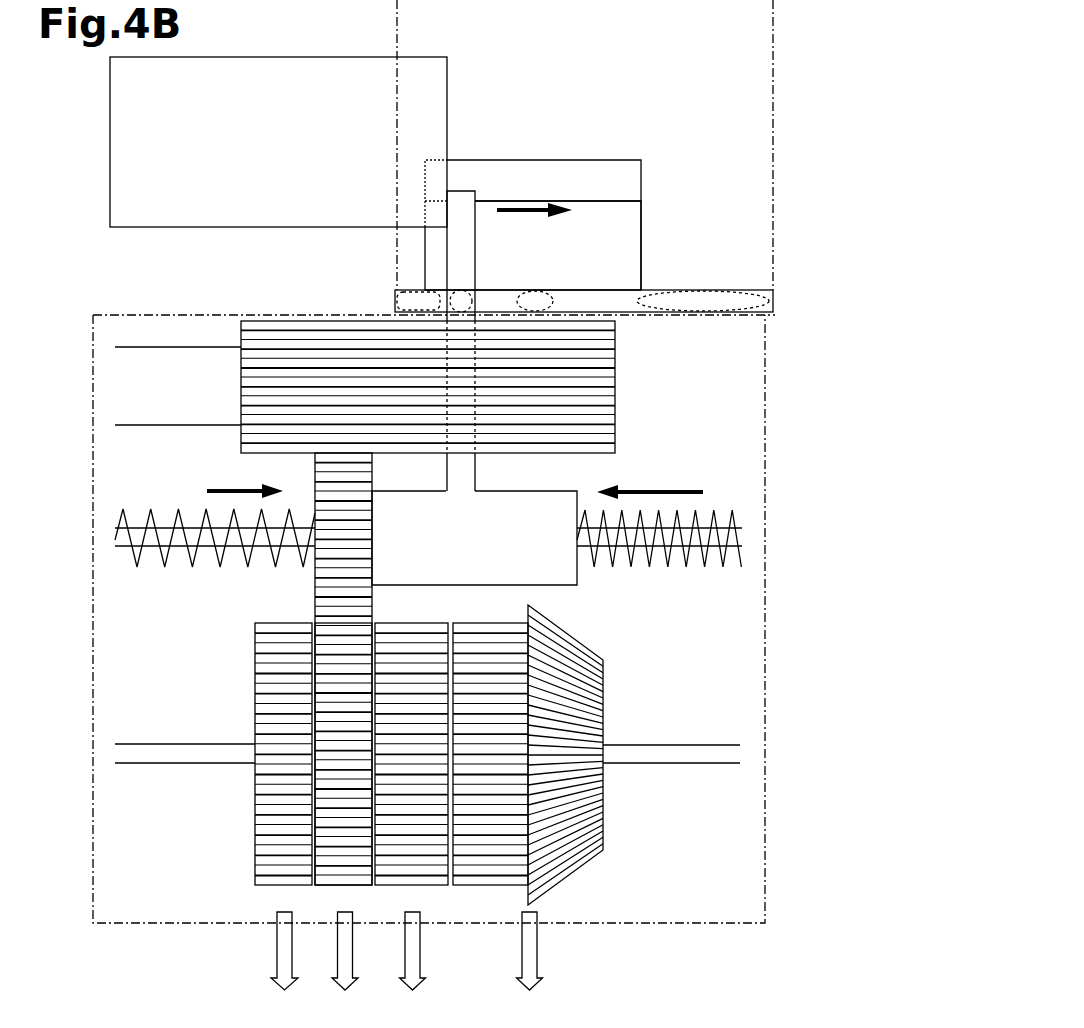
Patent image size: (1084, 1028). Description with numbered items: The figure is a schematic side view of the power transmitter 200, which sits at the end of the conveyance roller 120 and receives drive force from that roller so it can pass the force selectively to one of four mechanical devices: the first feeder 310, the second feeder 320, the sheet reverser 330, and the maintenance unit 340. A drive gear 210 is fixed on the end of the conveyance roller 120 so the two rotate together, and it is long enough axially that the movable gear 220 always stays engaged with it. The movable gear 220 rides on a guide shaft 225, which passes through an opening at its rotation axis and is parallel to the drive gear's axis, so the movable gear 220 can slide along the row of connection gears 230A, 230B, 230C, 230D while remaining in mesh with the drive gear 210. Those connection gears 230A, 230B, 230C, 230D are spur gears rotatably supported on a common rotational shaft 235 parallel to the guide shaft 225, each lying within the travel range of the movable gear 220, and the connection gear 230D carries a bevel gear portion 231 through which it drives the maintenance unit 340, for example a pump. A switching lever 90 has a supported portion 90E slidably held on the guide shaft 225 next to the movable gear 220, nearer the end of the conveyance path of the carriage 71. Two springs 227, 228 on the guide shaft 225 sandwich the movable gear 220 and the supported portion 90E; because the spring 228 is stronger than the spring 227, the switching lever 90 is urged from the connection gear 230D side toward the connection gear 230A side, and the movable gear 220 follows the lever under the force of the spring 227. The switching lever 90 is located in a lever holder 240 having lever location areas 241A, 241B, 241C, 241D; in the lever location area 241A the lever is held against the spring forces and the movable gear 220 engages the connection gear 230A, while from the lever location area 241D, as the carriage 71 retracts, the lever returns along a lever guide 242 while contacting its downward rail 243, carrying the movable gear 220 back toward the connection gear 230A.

The carriage 71 is at (449, 84).
The switching lever 90 is at (466, 190).
The supported portion 90E is at (548, 570).
The conveyance roller 120 is at (205, 353).
The power transmitter 200 is at (765, 410).
The drive gear 210 is at (618, 425).
The movable gear 220 is at (315, 573).
The guide shaft 225 is at (167, 533).
The spring 227 is at (190, 557).
The spring 228 is at (630, 563).
The connection gear 230A is at (257, 828).
The connection gear 230B is at (340, 677).
The connection gear 230C is at (410, 622).
The connection gear 230D is at (522, 638).
The bevel gear portion 231 is at (600, 678).
The rotational shaft 235 is at (180, 744).
The lever holder 240 is at (662, 259).
The lever location area 241A is at (412, 285).
The lever location area 241B is at (487, 293).
The lever location area 241C is at (542, 287).
The lever location area 241D is at (692, 287).
The lever guide 242 is at (641, 217).
The rail 243 is at (593, 200).
The first feeder 310 is at (287, 965).
The second feeder 320 is at (349, 965).
The sheet reverser 330 is at (416, 965).
The maintenance unit 340 is at (532, 965).